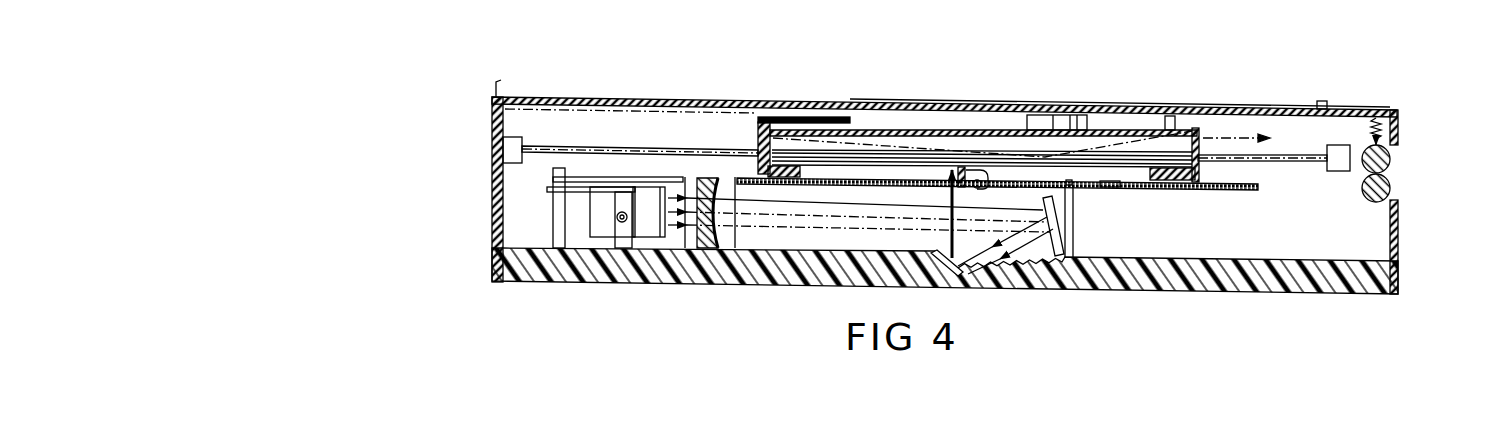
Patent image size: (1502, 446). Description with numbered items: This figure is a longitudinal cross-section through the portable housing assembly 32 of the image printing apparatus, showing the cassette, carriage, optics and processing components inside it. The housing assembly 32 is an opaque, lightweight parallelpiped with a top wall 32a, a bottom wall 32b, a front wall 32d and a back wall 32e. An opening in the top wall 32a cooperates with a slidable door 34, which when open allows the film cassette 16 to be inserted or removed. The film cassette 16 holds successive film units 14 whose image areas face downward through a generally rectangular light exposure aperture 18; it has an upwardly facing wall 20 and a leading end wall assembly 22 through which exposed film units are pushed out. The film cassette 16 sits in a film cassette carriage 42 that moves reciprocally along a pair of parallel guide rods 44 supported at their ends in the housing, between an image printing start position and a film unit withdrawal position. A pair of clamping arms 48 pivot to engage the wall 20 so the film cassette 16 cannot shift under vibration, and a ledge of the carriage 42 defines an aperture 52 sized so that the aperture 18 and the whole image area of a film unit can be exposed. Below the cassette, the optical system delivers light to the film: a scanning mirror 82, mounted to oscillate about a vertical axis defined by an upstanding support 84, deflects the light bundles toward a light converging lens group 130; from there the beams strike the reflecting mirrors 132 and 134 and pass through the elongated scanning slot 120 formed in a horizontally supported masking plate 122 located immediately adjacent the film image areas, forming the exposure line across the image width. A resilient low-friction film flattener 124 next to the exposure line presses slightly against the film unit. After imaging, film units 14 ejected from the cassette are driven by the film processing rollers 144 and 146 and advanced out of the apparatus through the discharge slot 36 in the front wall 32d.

The housing assembly 32 is at (942, 173).
The top wall 32a is at (501, 92).
The bottom wall 32b is at (840, 284).
The front wall 32d is at (1400, 233).
The back wall 32e is at (492, 206).
The film cassette carriage 42 is at (755, 119).
The film cassette 16 is at (808, 122).
The guide rods 44 is at (648, 146).
The film units 14 is at (918, 162).
The clamping arms 48 is at (1048, 115).
The upwardly facing wall 20 is at (1172, 116).
The leading end wall assembly 22 is at (1202, 145).
The door 34 is at (1268, 115).
The film processing roller 144 is at (1368, 148).
The discharge slot 36 is at (1336, 160).
The film processing roller 146 is at (1391, 188).
The upstanding support 84 is at (556, 177).
The scanning mirror 82 is at (650, 190).
The light converging lens group 130 is at (737, 238).
The scanning slot 120 is at (947, 180).
The film flattener 124 is at (985, 175).
The reflecting mirror 132 is at (940, 255).
The reflecting mirror 134 is at (1060, 238).
The aperture 52 is at (1110, 183).
The light exposure aperture 18 is at (1137, 180).
The masking plate 122 is at (1222, 187).